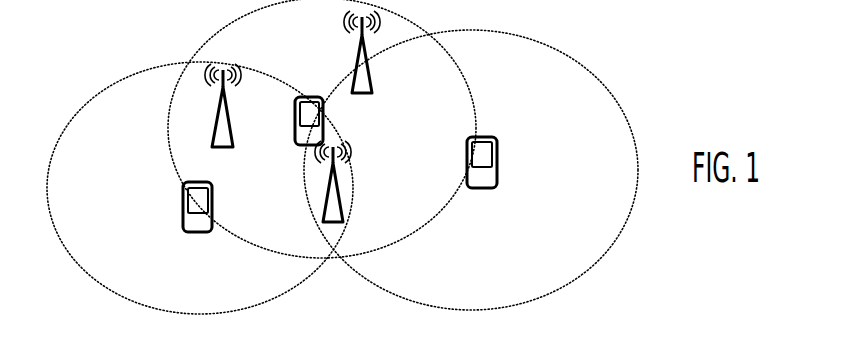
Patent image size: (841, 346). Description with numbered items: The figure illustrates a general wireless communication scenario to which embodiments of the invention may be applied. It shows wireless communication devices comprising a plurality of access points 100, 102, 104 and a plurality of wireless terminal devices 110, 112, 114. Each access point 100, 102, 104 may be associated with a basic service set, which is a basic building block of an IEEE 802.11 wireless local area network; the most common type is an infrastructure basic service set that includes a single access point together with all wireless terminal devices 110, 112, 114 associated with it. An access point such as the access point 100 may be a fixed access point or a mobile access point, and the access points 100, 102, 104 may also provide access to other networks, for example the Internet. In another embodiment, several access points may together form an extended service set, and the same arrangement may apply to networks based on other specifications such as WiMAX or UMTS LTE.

The access point 100 is at (326, 204).
The access point 102 is at (215, 124).
The access point 104 is at (354, 74).
The wireless terminal device 110 is at (185, 188).
The wireless terminal device 112 is at (467, 140).
The wireless terminal device 114 is at (296, 101).